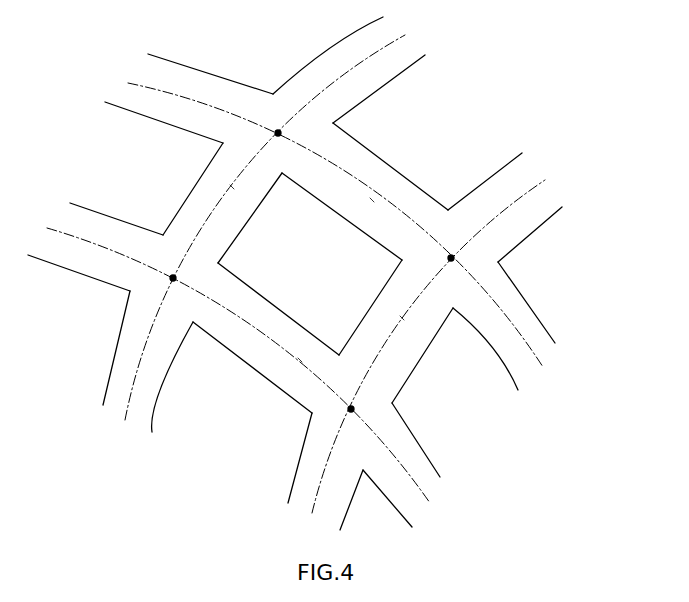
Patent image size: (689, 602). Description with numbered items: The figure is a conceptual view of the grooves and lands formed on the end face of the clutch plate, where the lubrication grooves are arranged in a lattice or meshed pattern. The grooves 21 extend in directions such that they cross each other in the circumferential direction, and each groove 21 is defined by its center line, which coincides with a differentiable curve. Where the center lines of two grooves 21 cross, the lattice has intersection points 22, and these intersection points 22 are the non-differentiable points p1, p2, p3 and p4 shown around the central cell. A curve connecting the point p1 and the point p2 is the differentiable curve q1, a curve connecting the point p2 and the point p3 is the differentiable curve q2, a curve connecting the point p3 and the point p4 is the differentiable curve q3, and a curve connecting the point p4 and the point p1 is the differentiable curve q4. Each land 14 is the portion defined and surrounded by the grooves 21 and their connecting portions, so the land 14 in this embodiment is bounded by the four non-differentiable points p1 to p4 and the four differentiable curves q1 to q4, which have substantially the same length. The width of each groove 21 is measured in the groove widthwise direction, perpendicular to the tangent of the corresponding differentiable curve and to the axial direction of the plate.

The land 14 is at (438, 280).
The groove 21 is at (155, 73).
The intersection point 22 is at (265, 118).
The non-differentiable point p1 is at (278, 133).
The non-differentiable point p2 is at (173, 278).
The non-differentiable point p3 is at (351, 409).
The non-differentiable point p4 is at (451, 258).
The differentiable curve q1 is at (232, 187).
The differentiable curve q2 is at (300, 360).
The differentiable curve q3 is at (402, 318).
The differentiable curve q4 is at (372, 200).